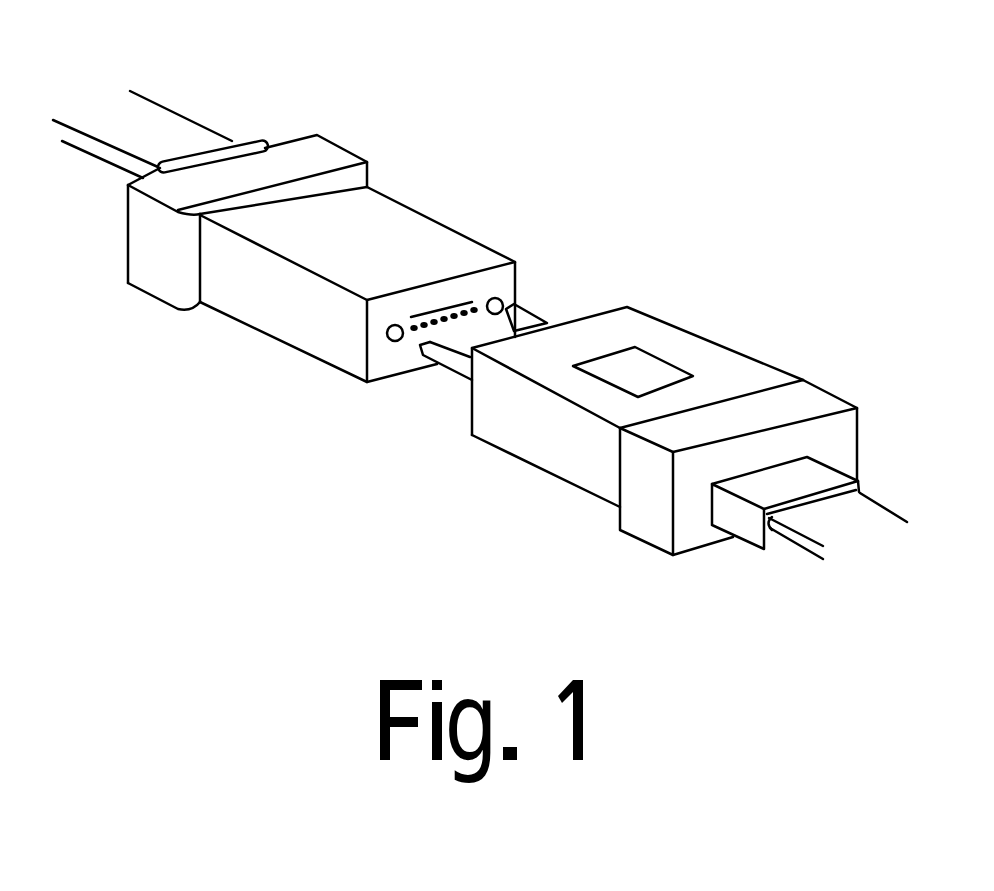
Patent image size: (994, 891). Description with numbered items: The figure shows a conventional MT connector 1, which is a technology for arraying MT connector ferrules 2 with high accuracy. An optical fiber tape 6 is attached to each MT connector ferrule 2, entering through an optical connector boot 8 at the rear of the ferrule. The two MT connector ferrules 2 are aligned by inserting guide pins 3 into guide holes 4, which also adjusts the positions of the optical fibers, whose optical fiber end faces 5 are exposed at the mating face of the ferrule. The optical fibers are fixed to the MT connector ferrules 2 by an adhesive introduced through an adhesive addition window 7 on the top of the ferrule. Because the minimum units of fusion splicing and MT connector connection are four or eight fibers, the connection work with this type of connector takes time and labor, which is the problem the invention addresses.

The MT connector 1 is at (488, 352).
The MT connector ferrule 2 is at (128, 213).
The guide pin 3 is at (437, 366).
The guide hole 4 is at (387, 333).
The optical fiber end face 5 is at (438, 308).
The optical fiber tape 6 is at (890, 514).
The adhesive addition window 7 is at (640, 363).
The optical connector boot 8 is at (743, 531).